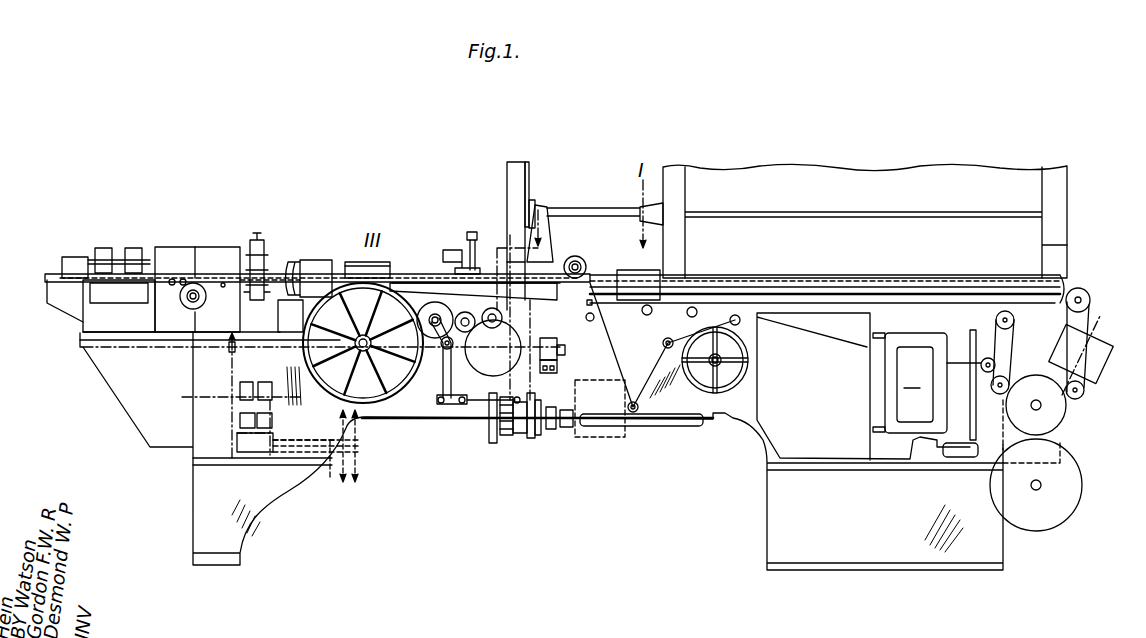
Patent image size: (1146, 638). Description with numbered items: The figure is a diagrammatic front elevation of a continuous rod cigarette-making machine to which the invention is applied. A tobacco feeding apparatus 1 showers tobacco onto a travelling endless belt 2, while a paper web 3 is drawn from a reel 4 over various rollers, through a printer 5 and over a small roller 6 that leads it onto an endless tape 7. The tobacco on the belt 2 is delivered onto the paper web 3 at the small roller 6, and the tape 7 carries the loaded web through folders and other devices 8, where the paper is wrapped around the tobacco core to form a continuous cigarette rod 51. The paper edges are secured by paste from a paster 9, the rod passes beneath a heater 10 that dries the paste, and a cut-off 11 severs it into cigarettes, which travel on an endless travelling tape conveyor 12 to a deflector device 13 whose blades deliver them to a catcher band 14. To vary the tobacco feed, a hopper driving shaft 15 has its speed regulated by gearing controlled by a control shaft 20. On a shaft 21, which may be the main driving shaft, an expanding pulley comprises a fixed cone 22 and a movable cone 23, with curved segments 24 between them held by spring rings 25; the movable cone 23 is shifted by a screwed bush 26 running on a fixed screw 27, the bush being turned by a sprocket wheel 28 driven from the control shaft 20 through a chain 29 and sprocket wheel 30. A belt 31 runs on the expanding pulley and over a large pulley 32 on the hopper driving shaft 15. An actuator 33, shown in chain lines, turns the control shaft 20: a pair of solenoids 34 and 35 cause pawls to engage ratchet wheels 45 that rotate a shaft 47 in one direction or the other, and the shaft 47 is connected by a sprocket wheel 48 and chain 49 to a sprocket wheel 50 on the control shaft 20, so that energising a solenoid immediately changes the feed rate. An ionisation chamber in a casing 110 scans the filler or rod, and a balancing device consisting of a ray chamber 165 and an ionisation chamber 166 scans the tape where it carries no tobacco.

The tobacco feeding apparatus 1 is at (865, 221).
The travelling endless belt 2 is at (660, 252).
The paper web 3 is at (553, 252).
The reel 4 is at (1060, 520).
The printer 5 is at (876, 386).
The small roller 6 is at (568, 325).
The endless tape 7 is at (518, 312).
The folders and other devices 8 is at (578, 258).
The paster 9 is at (476, 258).
The heater 10 is at (392, 262).
The cut-off 11 is at (262, 238).
The endless travelling tape conveyor 12 is at (178, 284).
The deflector device 13 is at (130, 248).
The catcher band 14 is at (118, 288).
The hopper driving shaft 15 is at (620, 208).
The control shaft 20 is at (127, 355).
The shaft 21 is at (685, 428).
The fixed cone 22 is at (490, 425).
The movable cone 23 is at (533, 440).
The curved segments 24 is at (520, 440).
The spring rings 25 is at (505, 440).
The screwed bush 26 is at (553, 432).
The fixed screw 27 is at (572, 428).
The sprocket wheel 28 is at (580, 392).
The chain 29 is at (575, 368).
The sprocket wheel 30 is at (590, 320).
The belt 31 is at (507, 178).
The large pulley 32 is at (529, 172).
The actuator 33 is at (255, 462).
The solenoid 34 is at (237, 422).
The solenoid 35 is at (275, 422).
The ratchet wheels 45 is at (275, 378).
The shaft 47 is at (285, 400).
The sprocket wheel 48 is at (229, 397).
The chain 49 is at (250, 380).
The sprocket wheel 50 is at (230, 350).
The continuous cigarette rod 51 is at (297, 262).
The casing 110 is at (355, 262).
The ray chamber 165 is at (1058, 348).
The ionisation chamber 166 is at (1088, 370).